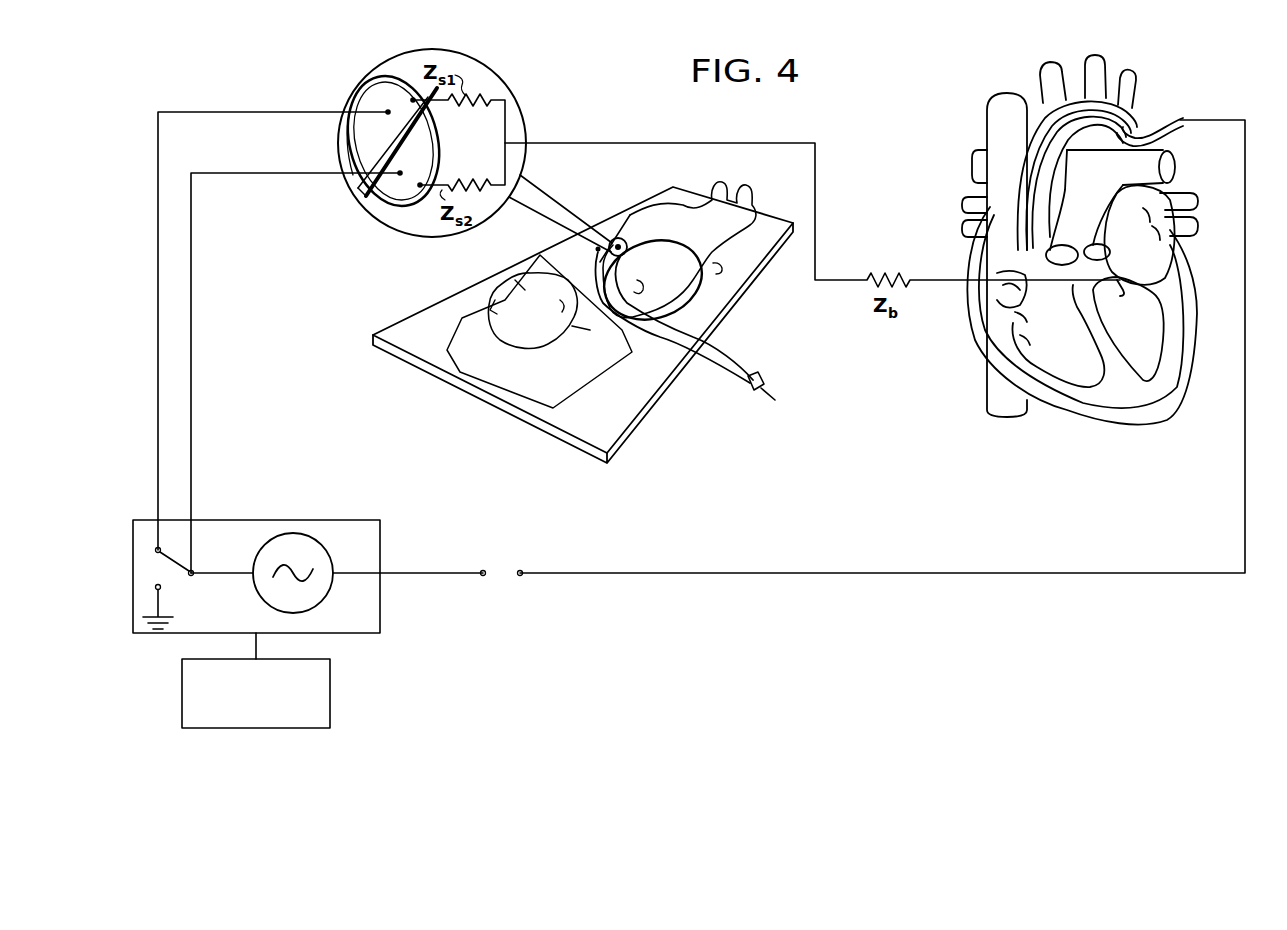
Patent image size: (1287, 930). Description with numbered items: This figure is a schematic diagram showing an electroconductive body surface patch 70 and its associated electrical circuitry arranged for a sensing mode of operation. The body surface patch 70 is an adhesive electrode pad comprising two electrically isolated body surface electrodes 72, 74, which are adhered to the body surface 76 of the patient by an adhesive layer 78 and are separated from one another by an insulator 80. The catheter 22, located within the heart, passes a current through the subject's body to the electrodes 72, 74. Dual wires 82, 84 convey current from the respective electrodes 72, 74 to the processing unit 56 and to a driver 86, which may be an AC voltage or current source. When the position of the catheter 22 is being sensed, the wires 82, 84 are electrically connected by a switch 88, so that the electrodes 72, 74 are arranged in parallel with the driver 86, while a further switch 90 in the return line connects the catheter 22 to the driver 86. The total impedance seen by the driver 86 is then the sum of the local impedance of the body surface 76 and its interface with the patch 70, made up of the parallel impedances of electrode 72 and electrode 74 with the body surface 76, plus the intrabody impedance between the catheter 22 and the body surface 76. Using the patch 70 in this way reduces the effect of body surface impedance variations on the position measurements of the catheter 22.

The catheter 22 is at (1160, 117).
The processing unit 56 is at (330, 688).
The body surface patch 70 is at (524, 80).
The body surface electrode 72 is at (386, 78).
The body surface electrode 74 is at (396, 220).
The body surface 76 is at (628, 253).
The adhesive layer 78 is at (357, 128).
The insulator 80 is at (366, 198).
The wire 82 is at (220, 112).
The wire 84 is at (242, 173).
The driver 86 is at (380, 527).
The switch 88 is at (167, 566).
The switch 90 is at (500, 576).